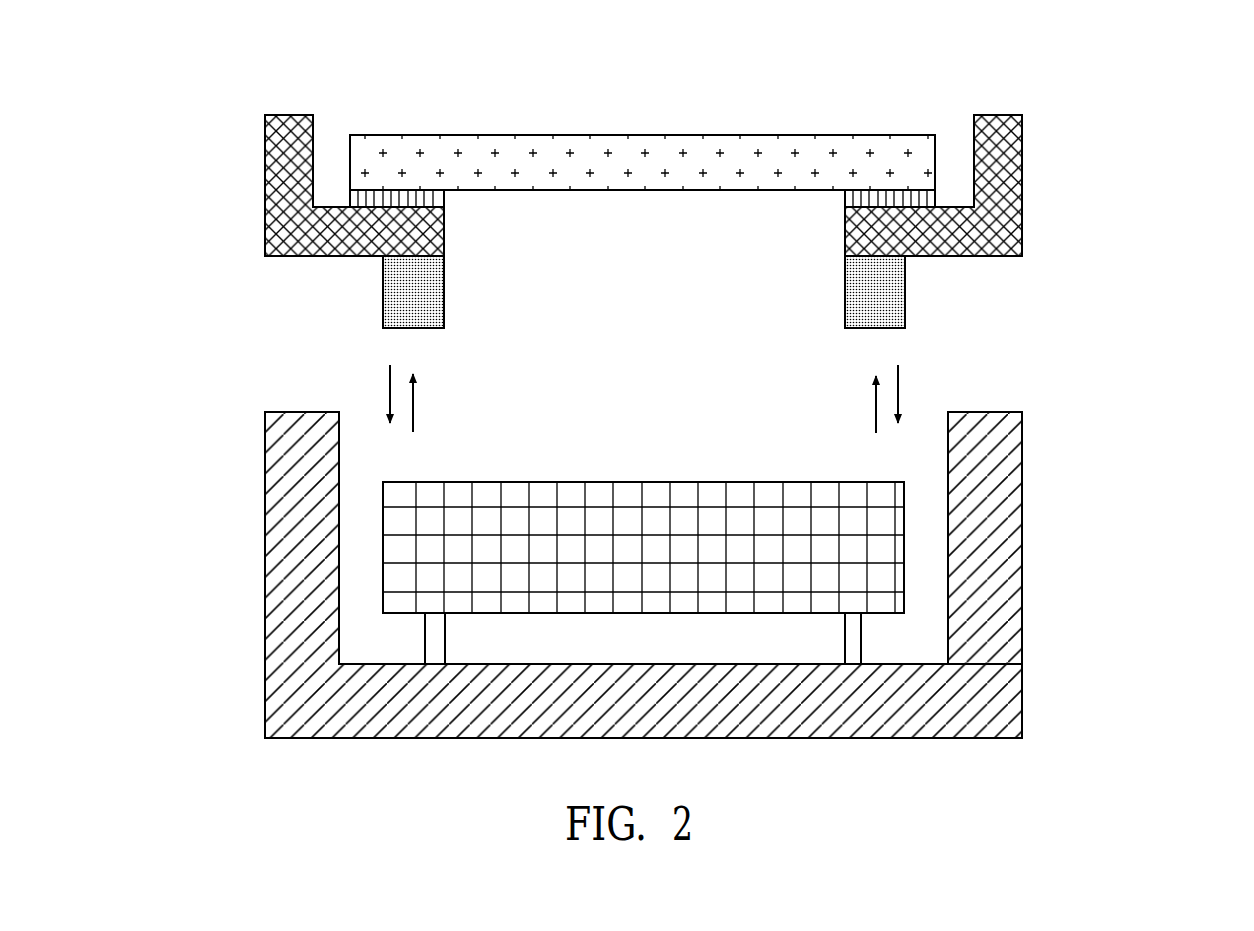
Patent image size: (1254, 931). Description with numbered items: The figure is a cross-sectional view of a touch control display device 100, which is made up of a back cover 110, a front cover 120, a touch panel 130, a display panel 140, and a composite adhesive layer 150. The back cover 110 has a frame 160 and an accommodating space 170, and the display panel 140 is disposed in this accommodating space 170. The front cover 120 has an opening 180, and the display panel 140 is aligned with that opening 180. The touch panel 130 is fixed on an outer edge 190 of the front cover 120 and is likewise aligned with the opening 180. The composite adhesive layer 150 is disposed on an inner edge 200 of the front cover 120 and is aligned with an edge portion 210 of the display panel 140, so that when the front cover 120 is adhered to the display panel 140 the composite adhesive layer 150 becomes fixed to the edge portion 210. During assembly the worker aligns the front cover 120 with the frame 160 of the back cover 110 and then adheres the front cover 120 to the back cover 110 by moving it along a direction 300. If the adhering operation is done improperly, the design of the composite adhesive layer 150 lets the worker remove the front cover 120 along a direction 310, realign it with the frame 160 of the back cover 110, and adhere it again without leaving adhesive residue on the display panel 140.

The touch control display device 100 is at (140, 85).
The back cover 110 is at (736, 556).
The front cover 120 is at (1064, 178).
The touch panel 130 is at (470, 150).
The display panel 140 is at (643, 505).
The composite adhesive layer 150 is at (383, 290).
The frame 160 is at (985, 412).
The accommodating space 170 is at (365, 428).
The opening 180 is at (667, 238).
The outer edge 190 is at (947, 207).
The inner edge 200 is at (923, 258).
The edge portion 210 is at (430, 482).
The direction 300 is at (905, 388).
The direction 310 is at (875, 405).